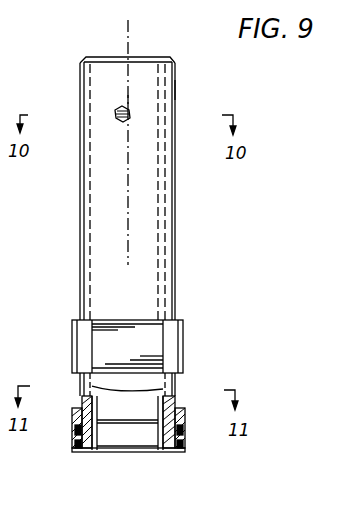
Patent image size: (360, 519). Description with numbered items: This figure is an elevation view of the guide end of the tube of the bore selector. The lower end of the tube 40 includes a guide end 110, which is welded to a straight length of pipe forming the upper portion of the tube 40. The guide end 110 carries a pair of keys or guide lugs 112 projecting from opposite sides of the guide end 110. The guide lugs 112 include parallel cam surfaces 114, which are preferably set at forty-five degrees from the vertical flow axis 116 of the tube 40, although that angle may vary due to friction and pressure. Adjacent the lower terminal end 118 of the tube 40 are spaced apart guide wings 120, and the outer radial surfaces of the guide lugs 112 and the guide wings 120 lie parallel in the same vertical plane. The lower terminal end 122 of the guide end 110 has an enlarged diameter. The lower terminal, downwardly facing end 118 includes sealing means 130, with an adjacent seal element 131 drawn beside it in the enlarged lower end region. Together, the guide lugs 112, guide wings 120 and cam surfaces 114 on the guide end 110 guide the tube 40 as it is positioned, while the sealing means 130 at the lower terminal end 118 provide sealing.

The tube 40 is at (176, 91).
The guide end 110 is at (80, 291).
The guide lugs 112 is at (126, 122).
The cam surfaces 114 is at (116, 112).
The vertical flow axis 116 is at (130, 247).
The lower terminal end 118 is at (173, 455).
The guide wings 120 is at (182, 341).
The lower terminal end of guide 122 is at (185, 424).
The sealing means 130 is at (76, 452).
The seal ring 131 is at (187, 443).